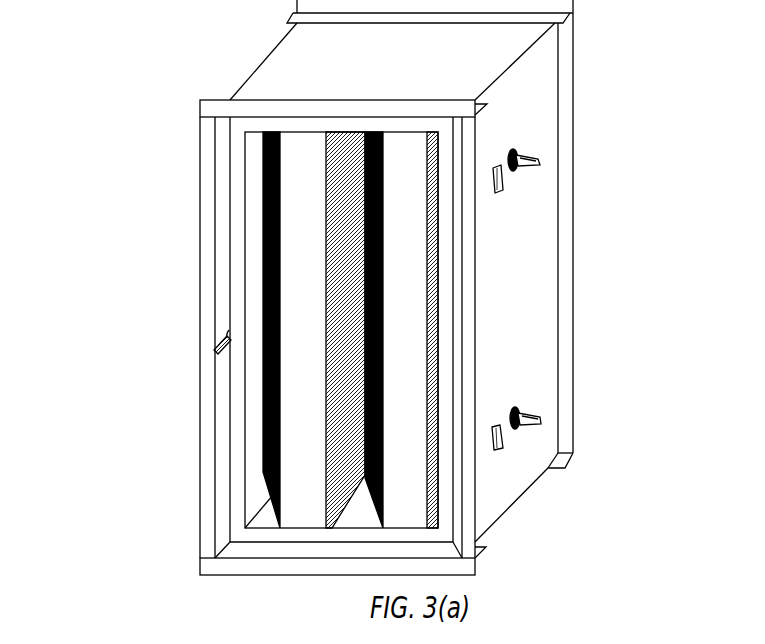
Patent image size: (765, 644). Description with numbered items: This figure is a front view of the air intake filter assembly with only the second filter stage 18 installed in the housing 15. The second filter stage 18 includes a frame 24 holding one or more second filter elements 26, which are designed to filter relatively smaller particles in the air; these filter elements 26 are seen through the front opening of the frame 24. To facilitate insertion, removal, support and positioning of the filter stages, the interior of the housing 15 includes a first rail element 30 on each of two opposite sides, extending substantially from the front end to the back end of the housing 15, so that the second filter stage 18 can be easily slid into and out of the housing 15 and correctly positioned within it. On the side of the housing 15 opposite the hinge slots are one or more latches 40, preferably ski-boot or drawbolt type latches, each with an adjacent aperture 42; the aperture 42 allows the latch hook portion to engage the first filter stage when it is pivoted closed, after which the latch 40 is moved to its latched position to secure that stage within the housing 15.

The housing 15 is at (518, 92).
The second filter stage 18 is at (238, 497).
The frame 24 is at (235, 268).
The second filter elements 26 is at (357, 190).
The rail element 30 is at (217, 350).
The latch 40 is at (518, 170).
The aperture 42 is at (500, 195).